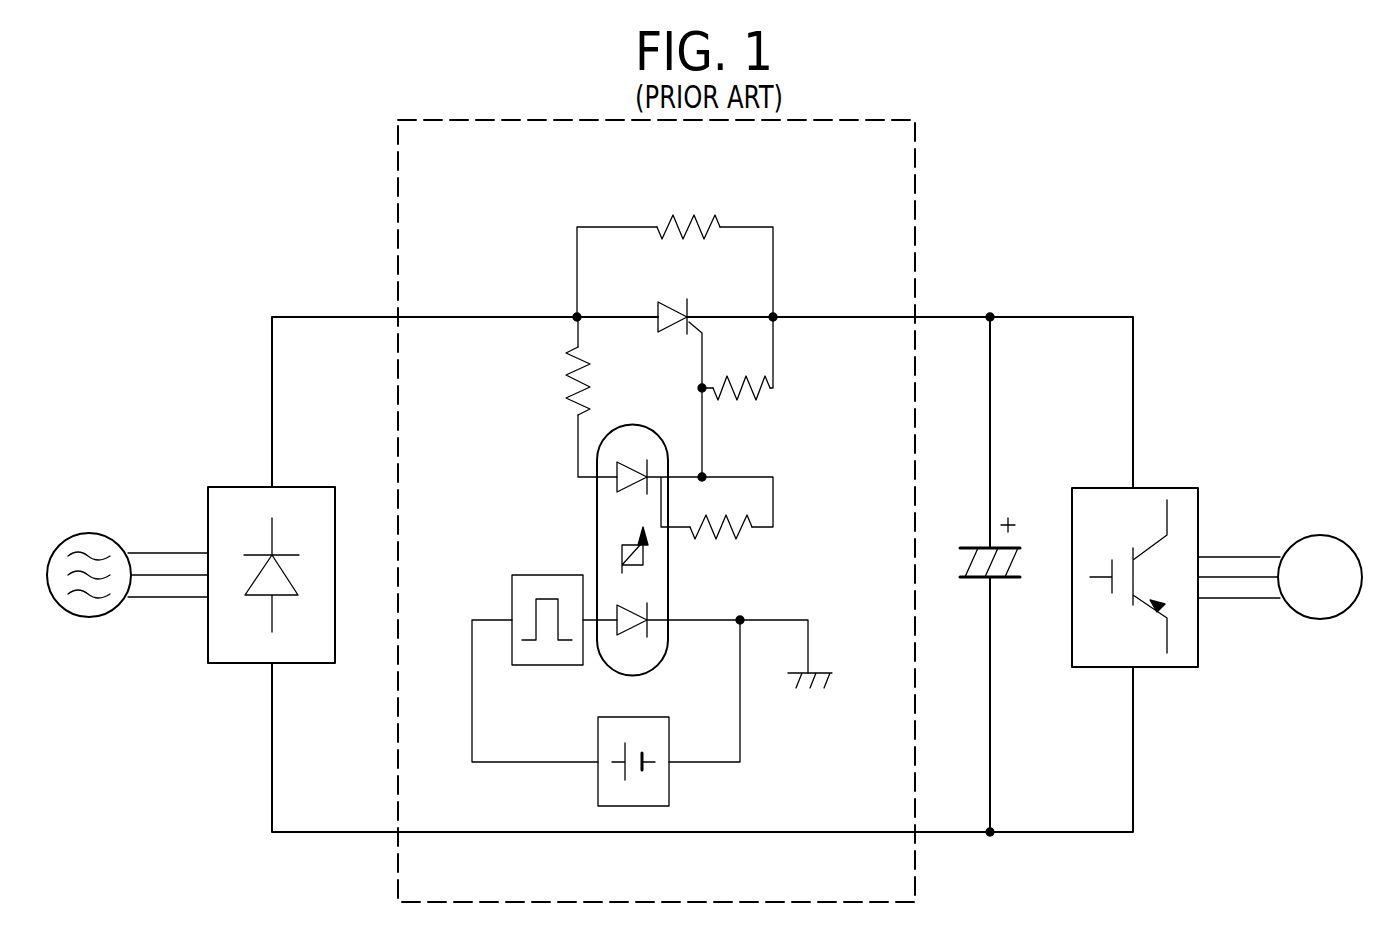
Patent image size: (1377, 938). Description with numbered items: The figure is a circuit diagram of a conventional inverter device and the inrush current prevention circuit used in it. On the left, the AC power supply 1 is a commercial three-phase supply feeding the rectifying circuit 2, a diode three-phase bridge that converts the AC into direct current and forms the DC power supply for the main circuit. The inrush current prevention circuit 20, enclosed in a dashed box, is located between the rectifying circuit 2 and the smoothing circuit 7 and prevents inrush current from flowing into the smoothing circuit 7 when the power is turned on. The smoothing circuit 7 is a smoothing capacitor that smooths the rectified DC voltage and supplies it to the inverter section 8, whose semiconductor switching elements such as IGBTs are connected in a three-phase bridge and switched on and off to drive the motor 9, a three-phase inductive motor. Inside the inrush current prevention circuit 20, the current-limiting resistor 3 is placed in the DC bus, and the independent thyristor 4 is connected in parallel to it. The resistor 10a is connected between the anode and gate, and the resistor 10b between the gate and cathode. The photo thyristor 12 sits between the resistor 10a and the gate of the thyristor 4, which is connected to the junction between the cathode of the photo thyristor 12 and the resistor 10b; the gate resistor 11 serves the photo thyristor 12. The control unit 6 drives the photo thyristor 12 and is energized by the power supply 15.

The AC power supply 1 is at (88, 533).
The rectifying circuit 2 is at (237, 487).
The current-limiting resistor 3 is at (684, 223).
The thyristor 4 is at (654, 300).
The control unit 6 is at (511, 590).
The smoothing circuit 7 is at (968, 546).
The inverter section 8 is at (1177, 487).
The motor 9 is at (1322, 535).
The resistor between anode and gate 10a is at (570, 376).
The resistor between gate and cathode 10b is at (740, 402).
The gate resistor 11 is at (742, 540).
The photo thyristor 12 is at (596, 512).
The power supply 15 is at (598, 732).
The inrush current prevention circuit 20 is at (915, 200).